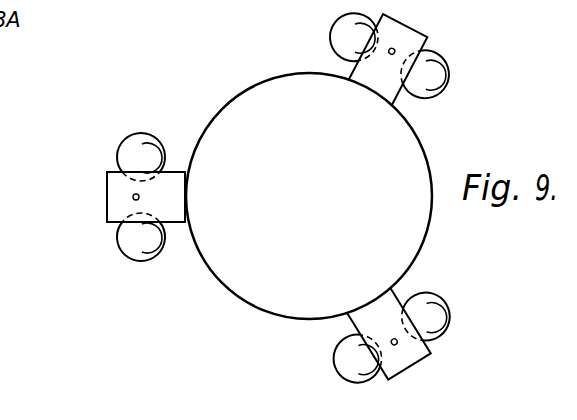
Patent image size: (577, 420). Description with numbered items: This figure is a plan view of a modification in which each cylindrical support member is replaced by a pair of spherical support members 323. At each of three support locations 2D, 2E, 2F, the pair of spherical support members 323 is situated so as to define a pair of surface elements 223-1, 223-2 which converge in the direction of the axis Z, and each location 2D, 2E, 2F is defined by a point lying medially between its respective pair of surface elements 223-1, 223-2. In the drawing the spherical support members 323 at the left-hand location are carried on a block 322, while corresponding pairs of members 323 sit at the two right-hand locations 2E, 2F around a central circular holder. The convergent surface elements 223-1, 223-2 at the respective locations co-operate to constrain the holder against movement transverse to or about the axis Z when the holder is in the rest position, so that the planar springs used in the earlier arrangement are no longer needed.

The location 2D is at (133, 198).
The location 2E is at (395, 47).
The location 2F is at (397, 345).
The clamp body 322 is at (151, 161).
The spherical support member 323 is at (126, 199).
The surface element 223-1 is at (197, 182).
The surface element 223-2 is at (201, 209).